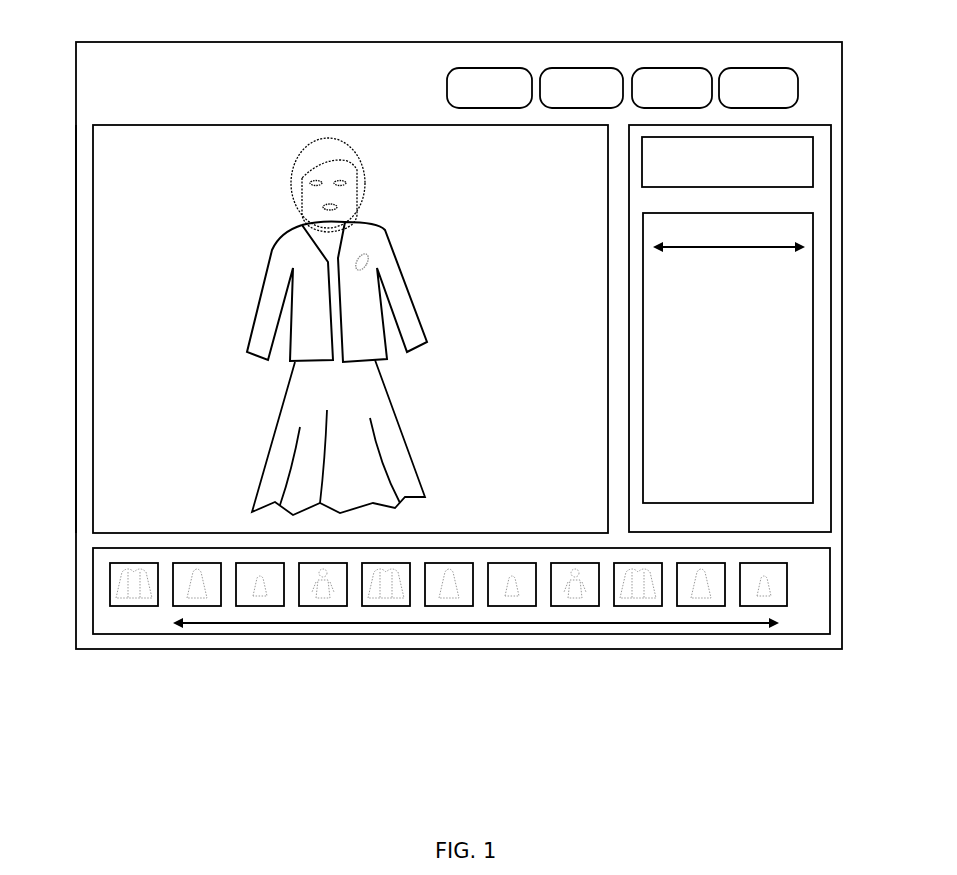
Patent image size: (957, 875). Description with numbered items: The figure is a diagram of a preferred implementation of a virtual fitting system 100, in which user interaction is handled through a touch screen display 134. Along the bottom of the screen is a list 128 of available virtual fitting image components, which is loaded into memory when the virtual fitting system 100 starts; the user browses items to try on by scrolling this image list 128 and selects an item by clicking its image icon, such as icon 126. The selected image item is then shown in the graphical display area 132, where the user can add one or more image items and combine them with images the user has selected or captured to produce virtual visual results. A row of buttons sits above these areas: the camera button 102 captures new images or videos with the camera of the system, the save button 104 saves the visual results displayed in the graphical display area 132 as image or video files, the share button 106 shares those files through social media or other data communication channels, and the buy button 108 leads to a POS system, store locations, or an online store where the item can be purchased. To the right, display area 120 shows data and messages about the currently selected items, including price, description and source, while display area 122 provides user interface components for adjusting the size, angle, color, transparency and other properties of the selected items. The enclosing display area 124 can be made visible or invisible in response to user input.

The virtual fitting system 100 is at (153, 38).
The camera button 102 is at (502, 68).
The save button 104 is at (577, 68).
The share button 106 is at (662, 68).
The buy button 108 is at (753, 68).
The display area 120 is at (813, 167).
The display area 122 is at (813, 238).
The display area 124 is at (831, 295).
The icon 126 is at (785, 563).
The list 128 is at (831, 575).
The graphical display area 132 is at (93, 259).
The touch screen display 134 is at (76, 328).